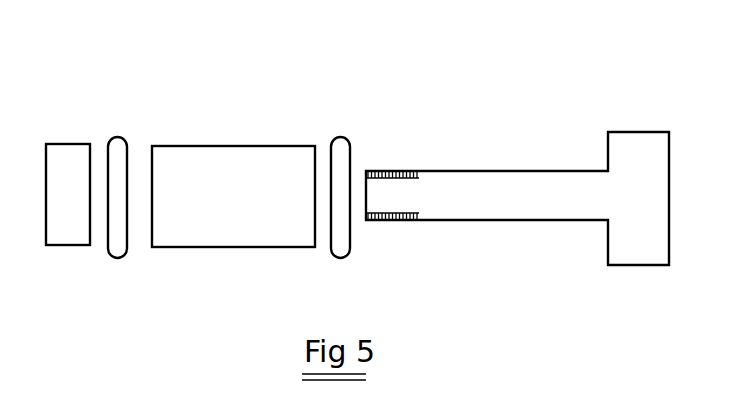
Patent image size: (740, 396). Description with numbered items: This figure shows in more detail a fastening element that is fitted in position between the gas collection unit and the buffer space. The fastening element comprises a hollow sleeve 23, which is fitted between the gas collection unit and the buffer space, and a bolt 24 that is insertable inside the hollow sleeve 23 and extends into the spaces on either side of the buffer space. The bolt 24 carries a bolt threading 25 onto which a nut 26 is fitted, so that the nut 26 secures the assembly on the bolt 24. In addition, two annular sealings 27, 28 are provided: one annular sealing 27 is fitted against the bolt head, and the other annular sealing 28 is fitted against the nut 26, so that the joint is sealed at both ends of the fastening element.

The hollow sleeve 23 is at (218, 160).
The bolt 24 is at (503, 183).
The bolt threading 25 is at (393, 173).
The nut 26 is at (68, 163).
The annular sealing 27 is at (340, 148).
The annular sealing 28 is at (118, 146).